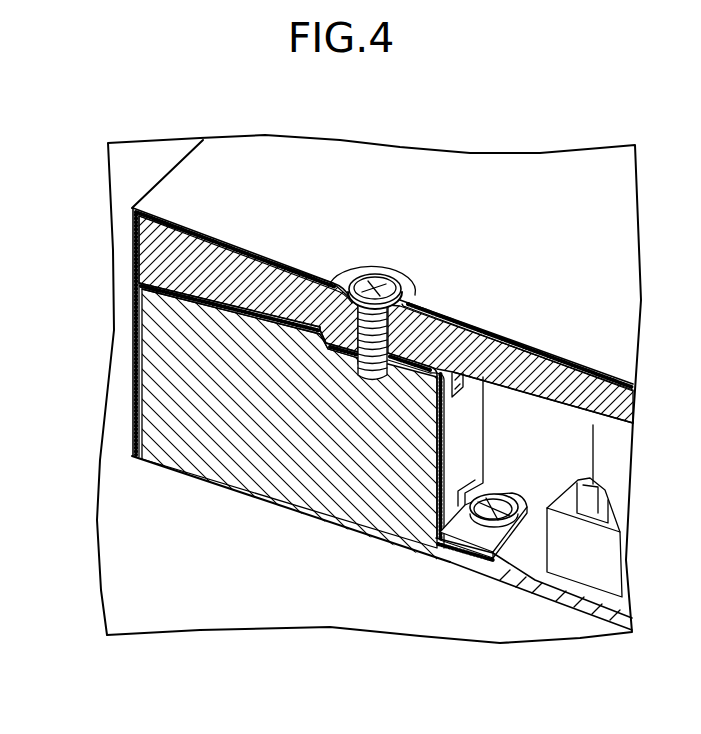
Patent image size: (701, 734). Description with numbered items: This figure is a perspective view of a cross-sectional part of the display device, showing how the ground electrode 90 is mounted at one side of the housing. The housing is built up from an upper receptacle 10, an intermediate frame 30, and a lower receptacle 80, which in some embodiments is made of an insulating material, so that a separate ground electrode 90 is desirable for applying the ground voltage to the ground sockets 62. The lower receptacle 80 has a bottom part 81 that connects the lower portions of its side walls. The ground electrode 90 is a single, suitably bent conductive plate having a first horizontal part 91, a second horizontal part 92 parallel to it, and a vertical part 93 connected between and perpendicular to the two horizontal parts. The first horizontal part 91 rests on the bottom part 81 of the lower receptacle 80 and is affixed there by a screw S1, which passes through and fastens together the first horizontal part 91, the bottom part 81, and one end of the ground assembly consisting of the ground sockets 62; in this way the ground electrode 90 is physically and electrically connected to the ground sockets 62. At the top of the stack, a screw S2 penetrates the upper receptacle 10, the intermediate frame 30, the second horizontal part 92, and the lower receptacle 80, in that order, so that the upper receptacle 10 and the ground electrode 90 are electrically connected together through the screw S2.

The upper receptacle 10 is at (166, 198).
The intermediate frame 30 is at (166, 255).
The lower receptacle 80 is at (182, 374).
The ground electrode 90 is at (385, 494).
The first horizontal part 91 is at (447, 548).
The second horizontal part 92 is at (377, 380).
The vertical part 93 is at (453, 455).
The screw S1 is at (478, 528).
The screw S2 is at (377, 293).
The bottom part 81 is at (537, 545).
The ground socket 62 is at (548, 555).